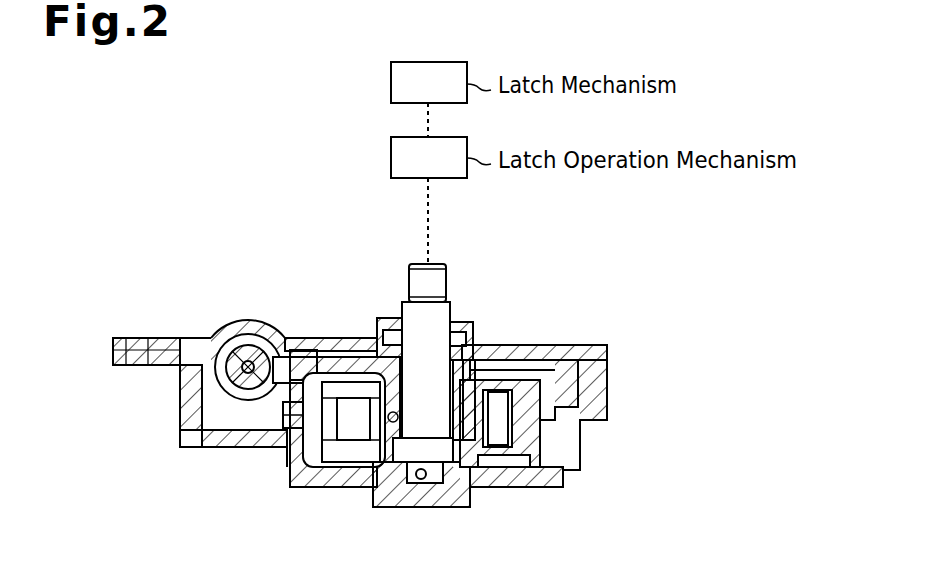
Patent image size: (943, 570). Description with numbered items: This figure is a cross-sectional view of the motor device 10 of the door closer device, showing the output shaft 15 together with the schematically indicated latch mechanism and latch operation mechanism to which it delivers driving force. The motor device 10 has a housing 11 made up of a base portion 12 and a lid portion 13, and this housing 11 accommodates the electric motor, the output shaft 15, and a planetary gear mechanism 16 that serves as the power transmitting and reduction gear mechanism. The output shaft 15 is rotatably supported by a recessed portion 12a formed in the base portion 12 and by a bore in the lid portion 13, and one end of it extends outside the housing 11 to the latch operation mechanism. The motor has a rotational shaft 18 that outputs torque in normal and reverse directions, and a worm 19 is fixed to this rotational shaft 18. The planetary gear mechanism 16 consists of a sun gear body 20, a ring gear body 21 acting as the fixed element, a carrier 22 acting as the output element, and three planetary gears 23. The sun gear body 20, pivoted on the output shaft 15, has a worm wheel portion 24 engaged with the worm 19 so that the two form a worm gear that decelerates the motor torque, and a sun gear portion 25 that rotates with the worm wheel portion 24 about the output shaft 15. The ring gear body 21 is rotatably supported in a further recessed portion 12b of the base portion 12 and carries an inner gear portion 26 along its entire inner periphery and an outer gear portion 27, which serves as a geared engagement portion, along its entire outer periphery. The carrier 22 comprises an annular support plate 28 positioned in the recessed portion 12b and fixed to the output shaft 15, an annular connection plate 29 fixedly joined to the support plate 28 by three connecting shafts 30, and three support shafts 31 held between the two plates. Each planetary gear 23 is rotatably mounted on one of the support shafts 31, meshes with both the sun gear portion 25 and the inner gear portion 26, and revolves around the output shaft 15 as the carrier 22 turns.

The motor device 10 is at (300, 221).
The housing 11 is at (672, 345).
The base portion 12 is at (607, 381).
The recessed portion 12a is at (423, 480).
The recessed portion 12b is at (545, 479).
The lid portion 13 is at (607, 354).
The output shaft 15 is at (409, 283).
The planetary gear mechanism 16 is at (514, 328).
The rotational shaft 18 is at (248, 352).
The worm 19 is at (200, 392).
The sun gear body 20 is at (357, 362).
The ring gear body 21 is at (302, 487).
The carrier 22 is at (488, 374).
The planetary gears 23 is at (458, 400).
The worm wheel portion 24 is at (299, 370).
The sun gear portion 25 is at (392, 417).
The inner gear portion 26 is at (290, 455).
The outer gear portion 27 is at (283, 416).
The annular support plate 28 is at (474, 464).
The annular connection plate 29 is at (488, 398).
The connecting shafts 30 is at (353, 440).
The support shafts 31 is at (507, 480).